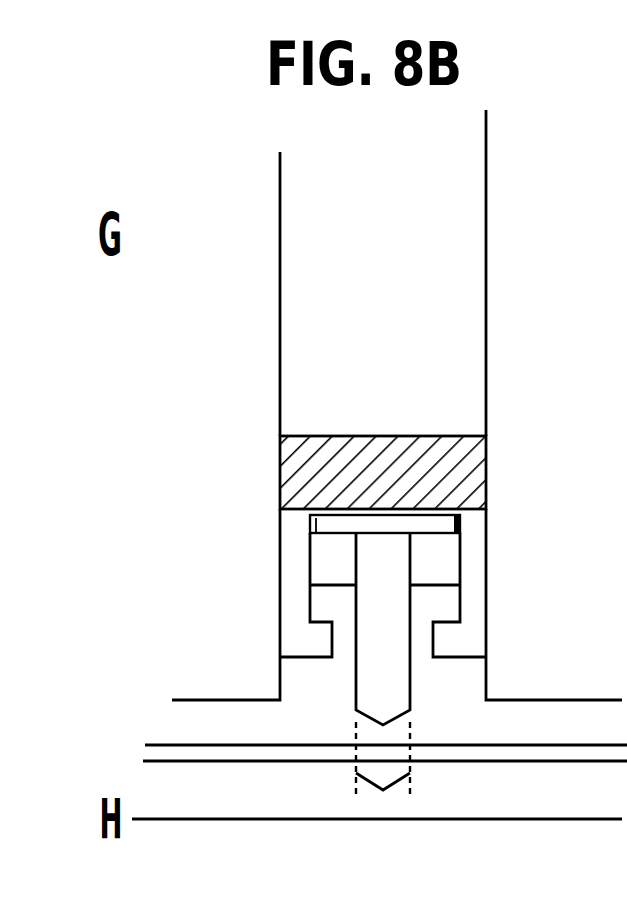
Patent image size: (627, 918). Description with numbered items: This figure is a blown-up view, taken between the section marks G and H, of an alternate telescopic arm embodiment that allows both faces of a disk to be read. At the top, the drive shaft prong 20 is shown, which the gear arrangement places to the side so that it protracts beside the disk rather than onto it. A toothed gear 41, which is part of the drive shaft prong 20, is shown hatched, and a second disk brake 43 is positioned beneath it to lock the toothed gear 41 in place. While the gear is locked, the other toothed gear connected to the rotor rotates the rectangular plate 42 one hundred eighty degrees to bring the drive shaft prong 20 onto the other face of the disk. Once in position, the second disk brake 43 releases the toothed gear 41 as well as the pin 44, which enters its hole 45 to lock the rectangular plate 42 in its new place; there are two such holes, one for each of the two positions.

The drive shaft prong 20 is at (441, 249).
The toothed gear 41 is at (290, 460).
The rectangular plate 42 is at (207, 725).
The second disk brake 43 is at (323, 528).
The pin 44 is at (393, 565).
The hole 45 is at (386, 774).